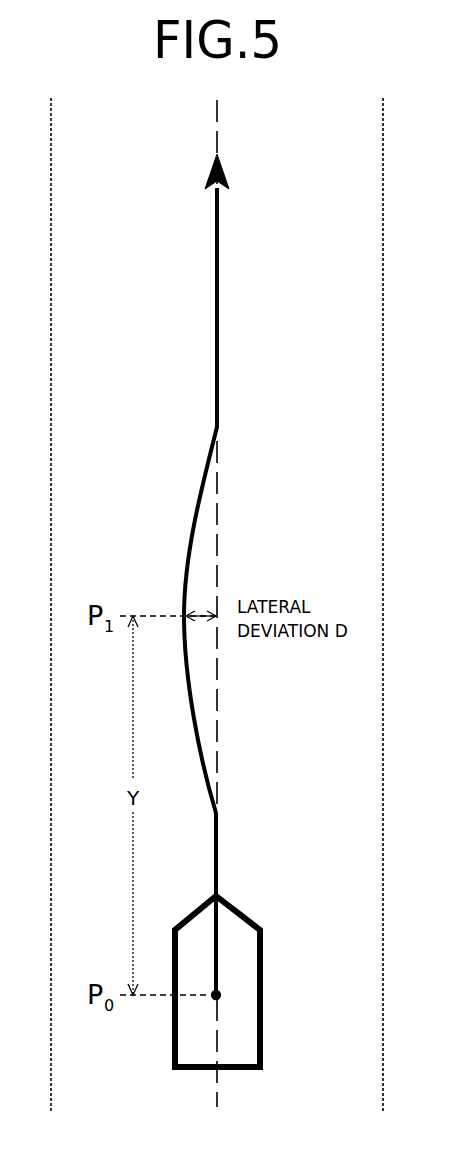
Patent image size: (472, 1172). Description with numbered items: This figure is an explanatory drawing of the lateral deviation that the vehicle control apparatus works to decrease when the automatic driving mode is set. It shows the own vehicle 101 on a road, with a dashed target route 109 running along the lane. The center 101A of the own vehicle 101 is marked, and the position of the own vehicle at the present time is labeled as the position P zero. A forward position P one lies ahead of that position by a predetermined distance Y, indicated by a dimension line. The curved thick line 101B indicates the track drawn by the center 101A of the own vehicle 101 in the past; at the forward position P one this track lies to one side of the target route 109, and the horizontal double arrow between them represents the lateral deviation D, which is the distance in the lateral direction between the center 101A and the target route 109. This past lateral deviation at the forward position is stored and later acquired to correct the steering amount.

The target route 109 is at (219, 138).
The own vehicle 101 is at (262, 958).
The center of the own vehicle 101A is at (222, 996).
The track drawn by the center of the own vehicle in the past 101B is at (187, 550).